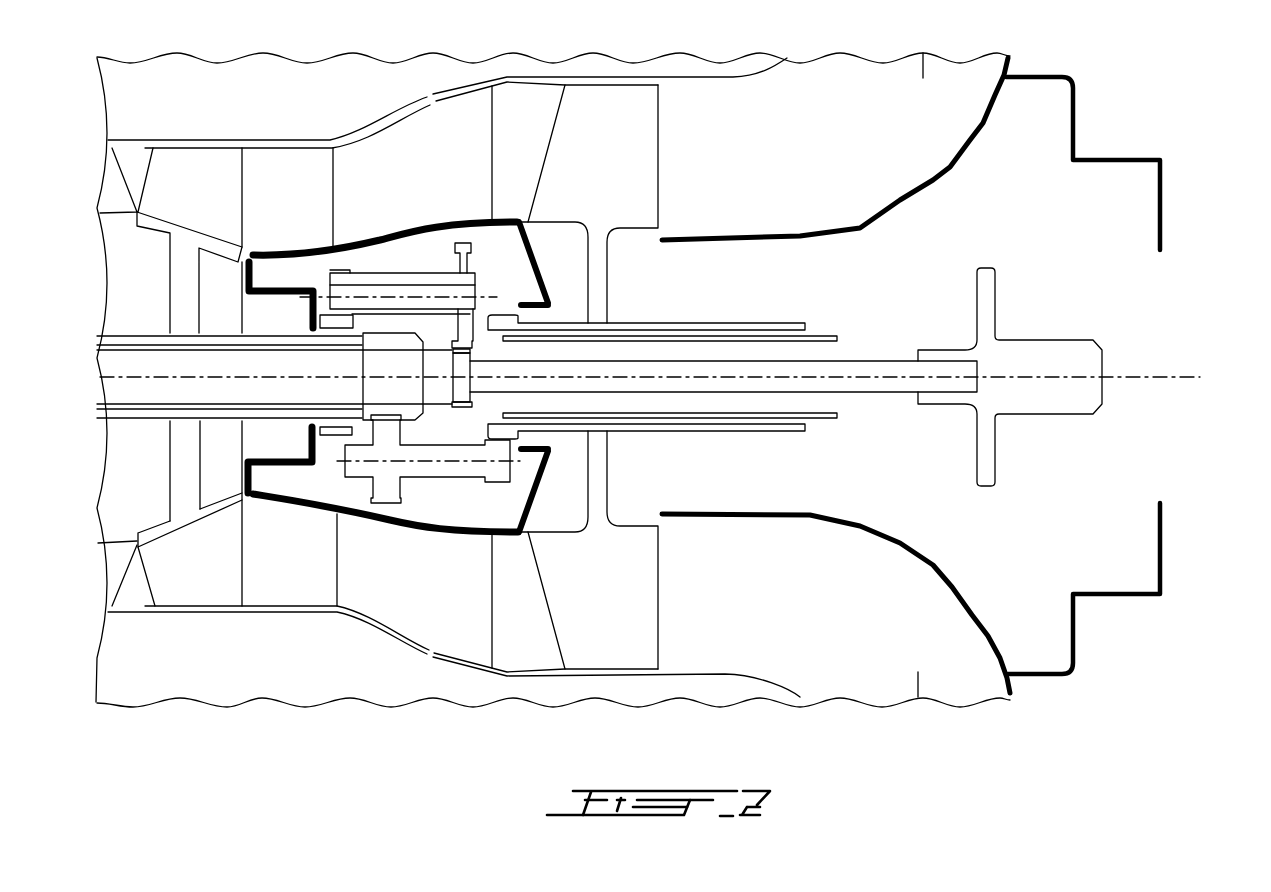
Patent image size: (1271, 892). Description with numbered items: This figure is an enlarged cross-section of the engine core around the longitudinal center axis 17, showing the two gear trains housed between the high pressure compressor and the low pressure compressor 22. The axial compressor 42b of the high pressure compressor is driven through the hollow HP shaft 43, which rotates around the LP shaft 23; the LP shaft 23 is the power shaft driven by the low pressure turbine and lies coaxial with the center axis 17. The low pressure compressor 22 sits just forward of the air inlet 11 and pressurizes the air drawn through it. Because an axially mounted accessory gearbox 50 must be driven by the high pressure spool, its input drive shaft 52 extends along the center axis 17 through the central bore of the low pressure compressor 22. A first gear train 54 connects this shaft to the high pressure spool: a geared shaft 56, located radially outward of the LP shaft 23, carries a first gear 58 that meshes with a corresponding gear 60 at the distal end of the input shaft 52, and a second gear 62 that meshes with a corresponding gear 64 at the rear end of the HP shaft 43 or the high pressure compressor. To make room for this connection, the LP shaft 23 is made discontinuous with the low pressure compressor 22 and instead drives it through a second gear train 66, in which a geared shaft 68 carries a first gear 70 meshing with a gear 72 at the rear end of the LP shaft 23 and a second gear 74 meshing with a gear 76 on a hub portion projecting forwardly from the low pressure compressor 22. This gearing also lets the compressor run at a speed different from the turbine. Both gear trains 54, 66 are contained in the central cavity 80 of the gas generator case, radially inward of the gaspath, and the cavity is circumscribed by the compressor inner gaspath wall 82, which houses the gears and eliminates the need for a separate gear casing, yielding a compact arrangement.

The air inlet 11 is at (839, 130).
The longitudinal center axis 17 is at (1167, 381).
The low pressure compressor 22 is at (633, 120).
The LP shaft 23 is at (263, 405).
The axial compressor 42b is at (195, 187).
The HP shaft 43 is at (163, 336).
The accessory gearbox 50 is at (1157, 293).
The AGB input drive shaft 52 is at (872, 362).
The first gear train 54 is at (401, 262).
The geared shaft 56 is at (427, 282).
The first gear 58 is at (472, 252).
The gear 60 is at (460, 407).
The second gear 62 is at (340, 268).
The gear 64 is at (335, 435).
The second gear train 66 is at (460, 467).
The geared shaft 68 is at (444, 512).
The first gear 70 is at (387, 505).
The gear 72 is at (392, 337).
The second gear 74 is at (498, 483).
The gear 76 is at (502, 317).
The central cavity 80 is at (313, 275).
The compressor inner gaspath wall 82 is at (405, 508).